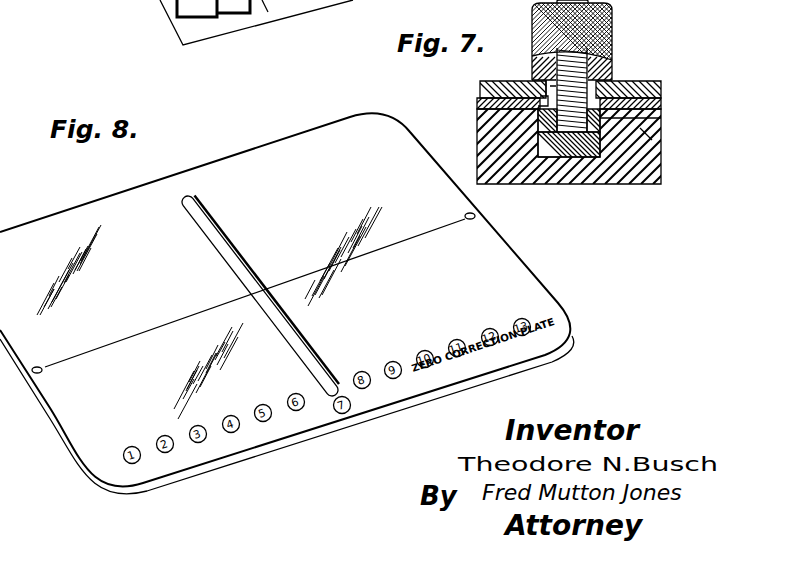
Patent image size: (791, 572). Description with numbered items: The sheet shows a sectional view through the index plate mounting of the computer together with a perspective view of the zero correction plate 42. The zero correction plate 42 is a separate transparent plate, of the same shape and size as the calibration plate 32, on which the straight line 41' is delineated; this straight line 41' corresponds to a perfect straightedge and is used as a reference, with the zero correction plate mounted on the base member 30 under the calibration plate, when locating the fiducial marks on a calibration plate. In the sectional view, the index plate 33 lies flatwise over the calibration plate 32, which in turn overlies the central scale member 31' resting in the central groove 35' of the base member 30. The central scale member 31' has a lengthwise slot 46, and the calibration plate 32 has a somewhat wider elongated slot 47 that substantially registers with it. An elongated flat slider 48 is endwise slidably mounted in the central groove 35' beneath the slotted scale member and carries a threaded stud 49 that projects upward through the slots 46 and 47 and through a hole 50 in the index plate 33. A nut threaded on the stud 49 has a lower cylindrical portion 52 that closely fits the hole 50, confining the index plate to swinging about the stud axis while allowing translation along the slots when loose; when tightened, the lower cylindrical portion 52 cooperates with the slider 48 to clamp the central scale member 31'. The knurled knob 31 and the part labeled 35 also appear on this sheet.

In FIG. 7, the base member 30 is at (655, 131).
In FIG. 7, the knurled knob 31 is at (602, 40).
In FIG. 7, the central scale member 31' is at (654, 111).
In FIG. 7, the calibration plate 32 is at (661, 101).
In FIG. 7, the index plate 33 is at (655, 82).
In FIG. 8, the slide member 35 is at (266, 29).
In FIG. 7, the central groove 35' is at (672, 145).
In FIG. 8, the straight line 41' is at (285, 293).
In FIG. 8, the zero correction plate 42 is at (330, 135).
In FIG. 7, the slot 46 is at (505, 129).
In FIG. 7, the elongated slot 47 is at (546, 96).
In FIG. 7, the slider 48 is at (578, 163).
In FIG. 7, the threaded stud 49 is at (534, 47).
In FIG. 7, the hole 50 is at (596, 74).
In FIG. 7, the lower cylindrical portion 52 is at (552, 82).